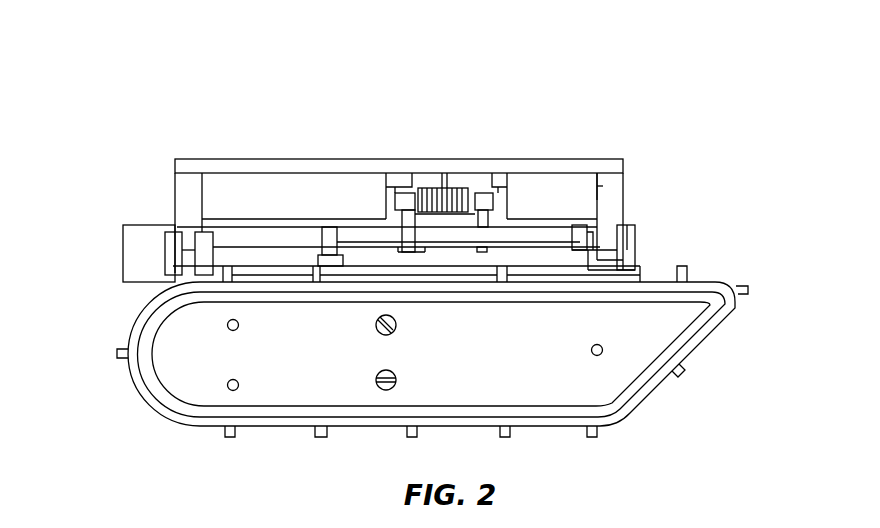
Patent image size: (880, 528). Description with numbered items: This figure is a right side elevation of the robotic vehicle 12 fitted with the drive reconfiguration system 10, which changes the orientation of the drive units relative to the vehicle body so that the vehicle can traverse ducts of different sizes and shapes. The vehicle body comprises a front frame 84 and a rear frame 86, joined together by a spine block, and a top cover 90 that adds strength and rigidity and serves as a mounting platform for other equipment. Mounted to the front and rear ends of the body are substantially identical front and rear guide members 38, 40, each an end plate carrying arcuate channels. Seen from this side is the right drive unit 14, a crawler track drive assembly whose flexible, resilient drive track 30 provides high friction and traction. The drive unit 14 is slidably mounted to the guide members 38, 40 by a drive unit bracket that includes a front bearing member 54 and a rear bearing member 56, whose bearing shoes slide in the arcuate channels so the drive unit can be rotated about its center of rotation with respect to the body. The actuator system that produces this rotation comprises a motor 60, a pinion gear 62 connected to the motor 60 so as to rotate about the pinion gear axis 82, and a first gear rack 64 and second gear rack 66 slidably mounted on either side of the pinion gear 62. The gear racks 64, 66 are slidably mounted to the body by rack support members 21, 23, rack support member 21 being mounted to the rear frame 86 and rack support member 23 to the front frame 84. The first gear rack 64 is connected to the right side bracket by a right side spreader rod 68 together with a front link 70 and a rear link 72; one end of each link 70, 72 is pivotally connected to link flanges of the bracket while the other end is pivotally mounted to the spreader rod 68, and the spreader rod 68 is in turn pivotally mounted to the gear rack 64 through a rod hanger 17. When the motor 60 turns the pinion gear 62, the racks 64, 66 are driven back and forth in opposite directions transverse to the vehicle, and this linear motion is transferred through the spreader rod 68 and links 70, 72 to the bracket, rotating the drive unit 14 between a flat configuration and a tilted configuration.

The drive reconfiguration system 10 is at (170, 66).
The robotic vehicle 12 is at (287, 157).
The drive unit 14 is at (724, 327).
The rod hanger 17 is at (412, 258).
The rack support member 21 is at (390, 185).
The rack support member 23 is at (500, 185).
The drive track 30 is at (117, 353).
The front guide member 38 is at (625, 181).
The rear guide member 40 is at (175, 186).
The front bearing member 54 is at (635, 238).
The rear bearing member 56 is at (165, 260).
The motor 60 is at (123, 249).
The pinion gear 62 is at (470, 191).
The first gear rack 64 is at (408, 191).
The second gear rack 66 is at (483, 180).
The right side spreader rod 68 is at (527, 220).
The front link 70 is at (580, 227).
The rear link 72 is at (328, 227).
The pinion gear axis 82 is at (445, 186).
The front frame 84 is at (598, 186).
The rear frame 86 is at (202, 198).
The top cover 90 is at (625, 163).